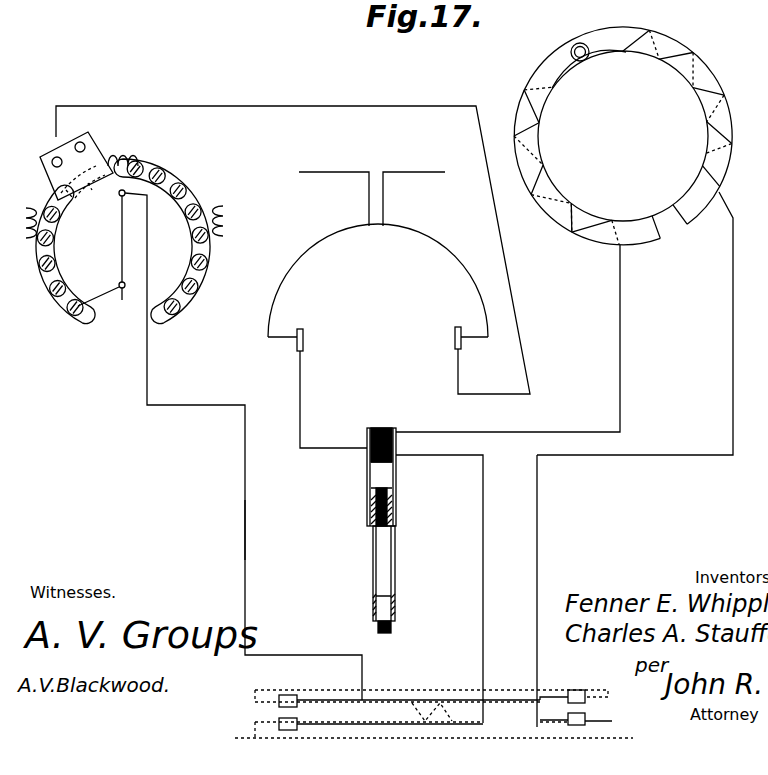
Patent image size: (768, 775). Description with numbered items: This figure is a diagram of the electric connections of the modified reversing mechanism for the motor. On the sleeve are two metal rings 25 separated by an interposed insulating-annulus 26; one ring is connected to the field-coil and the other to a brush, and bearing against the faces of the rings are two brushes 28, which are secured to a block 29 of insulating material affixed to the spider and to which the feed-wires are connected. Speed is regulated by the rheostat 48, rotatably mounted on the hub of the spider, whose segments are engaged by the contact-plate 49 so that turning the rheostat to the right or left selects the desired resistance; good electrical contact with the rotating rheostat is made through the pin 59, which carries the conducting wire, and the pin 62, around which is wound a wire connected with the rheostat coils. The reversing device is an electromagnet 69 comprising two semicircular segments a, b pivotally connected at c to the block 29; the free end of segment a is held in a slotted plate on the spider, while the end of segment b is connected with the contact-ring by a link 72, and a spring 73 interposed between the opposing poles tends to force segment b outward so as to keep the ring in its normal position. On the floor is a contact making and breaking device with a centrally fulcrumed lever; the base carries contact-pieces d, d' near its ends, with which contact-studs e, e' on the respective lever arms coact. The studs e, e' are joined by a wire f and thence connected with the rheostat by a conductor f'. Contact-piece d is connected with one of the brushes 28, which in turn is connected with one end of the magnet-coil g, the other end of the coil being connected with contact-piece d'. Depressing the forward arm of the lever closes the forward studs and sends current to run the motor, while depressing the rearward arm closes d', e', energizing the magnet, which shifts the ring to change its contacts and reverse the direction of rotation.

The metal rings 25 is at (390, 571).
The insulating-annulus 26 is at (388, 492).
The brushes 28 is at (390, 473).
The block 29 is at (383, 428).
The rheostat 48 is at (48, 288).
The contact-plate 49 is at (50, 152).
The pin 59 is at (119, 196).
The pin 62 is at (105, 303).
The electromagnet 69 is at (222, 0).
The link 72 is at (258, 0).
The spring 73 is at (302, 6).
The segment a is at (733, 128).
The segment b is at (556, 216).
The pivot c is at (580, 43).
The magnet-coil g is at (543, 165).
The contact-stud e is at (423, 686).
The contact-piece d is at (356, 715).
The contact-stud e' is at (579, 678).
The contact-piece d' is at (588, 723).
The wire f is at (434, 697).
The conductor f' is at (258, 530).